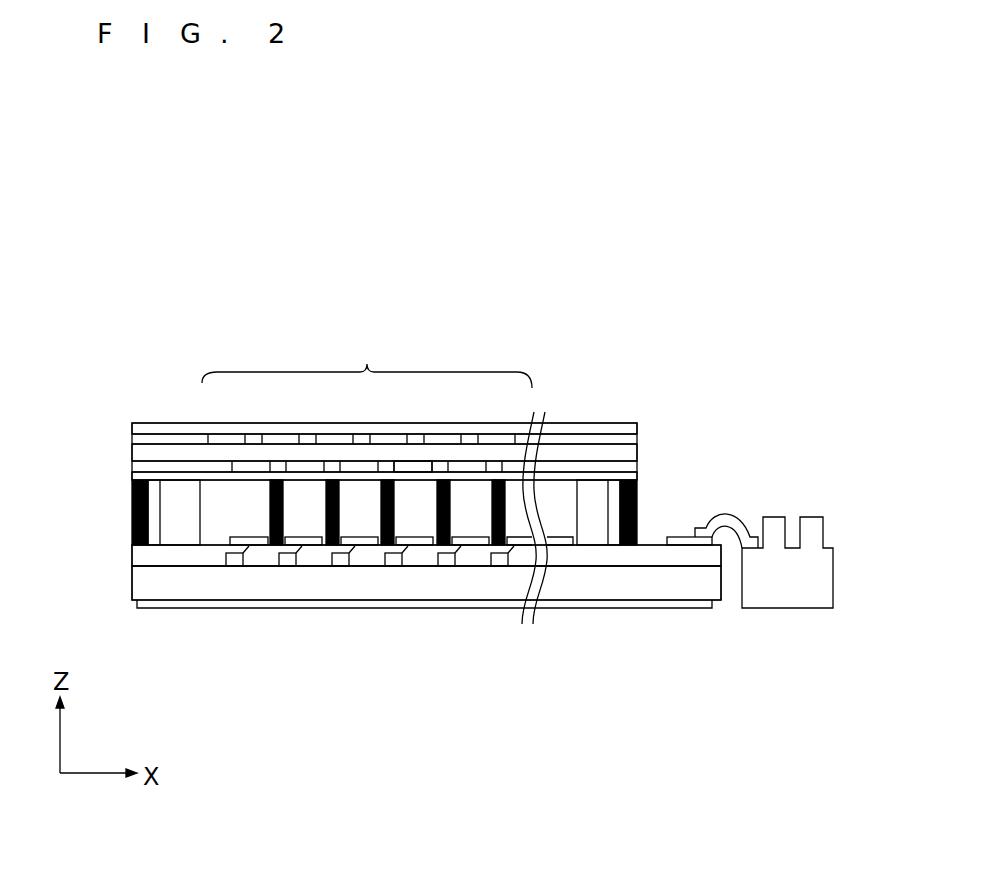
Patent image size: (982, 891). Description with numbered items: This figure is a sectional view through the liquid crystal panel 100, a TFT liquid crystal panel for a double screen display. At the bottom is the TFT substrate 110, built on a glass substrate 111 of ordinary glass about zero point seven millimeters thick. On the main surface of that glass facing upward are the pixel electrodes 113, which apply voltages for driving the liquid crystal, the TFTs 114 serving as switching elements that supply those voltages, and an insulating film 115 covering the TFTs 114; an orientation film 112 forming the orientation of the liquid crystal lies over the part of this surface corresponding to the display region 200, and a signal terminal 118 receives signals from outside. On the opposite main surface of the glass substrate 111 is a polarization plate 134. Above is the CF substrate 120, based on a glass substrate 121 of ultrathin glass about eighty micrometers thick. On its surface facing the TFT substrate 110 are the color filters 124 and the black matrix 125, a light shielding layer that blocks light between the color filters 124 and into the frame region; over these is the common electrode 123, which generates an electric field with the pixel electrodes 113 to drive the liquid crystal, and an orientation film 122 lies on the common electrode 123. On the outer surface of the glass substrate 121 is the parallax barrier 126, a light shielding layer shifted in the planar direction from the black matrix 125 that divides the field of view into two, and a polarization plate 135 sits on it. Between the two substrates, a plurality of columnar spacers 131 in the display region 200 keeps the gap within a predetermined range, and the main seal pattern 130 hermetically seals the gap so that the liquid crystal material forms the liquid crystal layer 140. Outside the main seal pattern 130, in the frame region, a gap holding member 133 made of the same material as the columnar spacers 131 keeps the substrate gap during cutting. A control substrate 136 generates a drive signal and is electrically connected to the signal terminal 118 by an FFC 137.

The liquid crystal panel 100 is at (692, 272).
The TFT substrate 110 is at (115, 533).
The glass substrate 111 is at (572, 588).
The orientation film 112 is at (212, 546).
The pixel electrodes 113 is at (470, 546).
The TFTs 114 is at (393, 563).
The insulating film 115 is at (313, 557).
The signal terminal 118 is at (685, 544).
The CF substrate 120 is at (115, 437).
The glass substrate 121 is at (132, 447).
The orientation film 122 is at (212, 487).
The common electrode 123 is at (628, 478).
The color filters 124 is at (412, 467).
The black matrix 125 is at (188, 466).
The parallax barrier 126 is at (148, 430).
The main seal pattern 130 is at (590, 500).
The columnar spacers 131 is at (443, 546).
The gap holding member 133 is at (131, 520).
The polarization plate 134 is at (627, 606).
The polarization plate 135 is at (132, 428).
The control substrate 136 is at (788, 593).
The FFC 137 is at (731, 517).
The liquid crystal layer 140 is at (255, 515).
The display region 200 is at (367, 359).